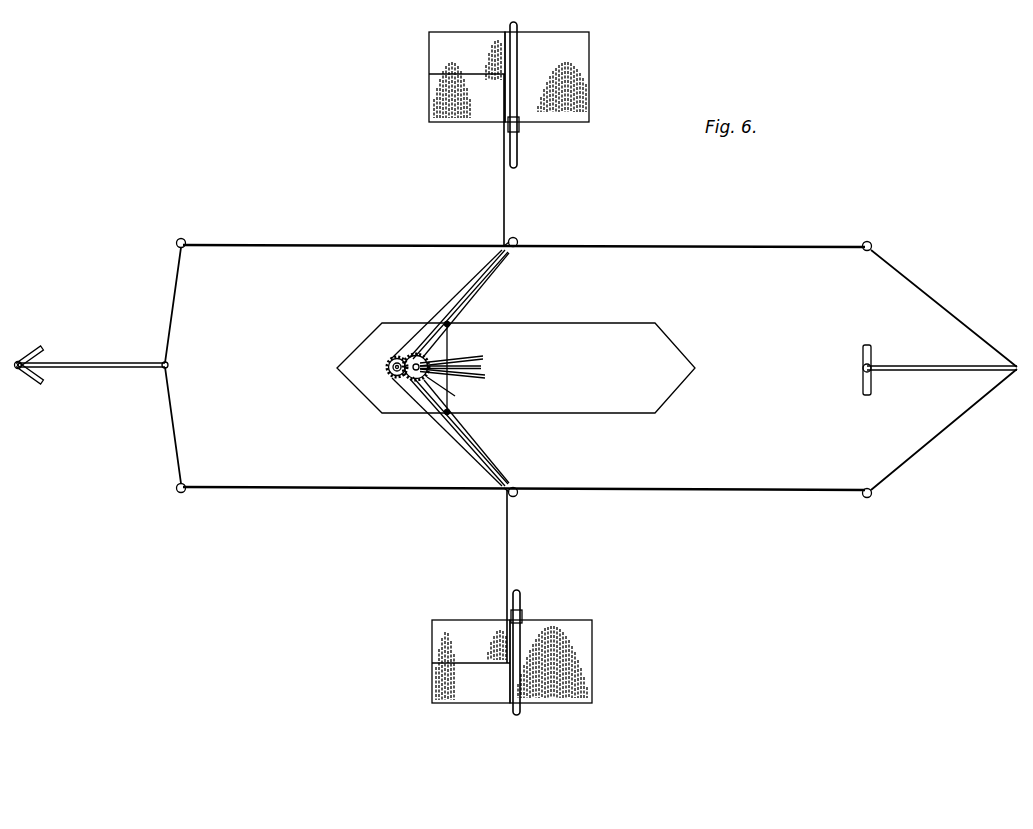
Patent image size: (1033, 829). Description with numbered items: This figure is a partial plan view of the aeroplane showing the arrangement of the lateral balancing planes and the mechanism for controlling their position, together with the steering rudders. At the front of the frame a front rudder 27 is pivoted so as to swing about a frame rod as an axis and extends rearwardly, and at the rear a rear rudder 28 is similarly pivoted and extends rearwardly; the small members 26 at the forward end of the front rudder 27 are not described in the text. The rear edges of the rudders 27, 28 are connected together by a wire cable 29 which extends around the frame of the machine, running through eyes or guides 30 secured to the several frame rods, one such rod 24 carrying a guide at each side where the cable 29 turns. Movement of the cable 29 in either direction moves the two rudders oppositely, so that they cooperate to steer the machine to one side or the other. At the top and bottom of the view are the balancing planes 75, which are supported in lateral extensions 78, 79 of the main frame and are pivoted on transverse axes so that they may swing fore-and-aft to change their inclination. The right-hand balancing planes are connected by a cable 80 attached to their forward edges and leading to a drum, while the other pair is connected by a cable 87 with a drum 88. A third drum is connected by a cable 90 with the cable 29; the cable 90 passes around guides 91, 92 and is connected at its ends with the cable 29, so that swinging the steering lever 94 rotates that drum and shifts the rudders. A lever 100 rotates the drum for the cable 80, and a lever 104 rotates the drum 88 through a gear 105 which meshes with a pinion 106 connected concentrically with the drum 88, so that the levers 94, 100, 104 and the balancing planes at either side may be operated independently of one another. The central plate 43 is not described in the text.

The rod 24 is at (517, 240).
The arm 26 is at (36, 345).
The front rudder 27 is at (108, 367).
The rear rudder 28 is at (915, 372).
The wire cable 29 is at (347, 248).
The eyes or guides 30 is at (185, 249).
The plate 43 is at (685, 340).
The upper balancing plane 75 is at (580, 92).
The lateral extension of the main frame 78 is at (517, 632).
The lateral extension of the main frame 79 is at (514, 48).
The cable 80 is at (510, 570).
The cable 87 is at (507, 207).
The drum 88 is at (386, 362).
The cable 90 is at (495, 262).
The guide 91 is at (515, 253).
The guide 92 is at (515, 482).
The steering lever 94 is at (482, 364).
The lever 100 is at (483, 378).
The lever 104 is at (478, 356).
The gear 105 is at (457, 393).
The pinion 106 is at (404, 372).